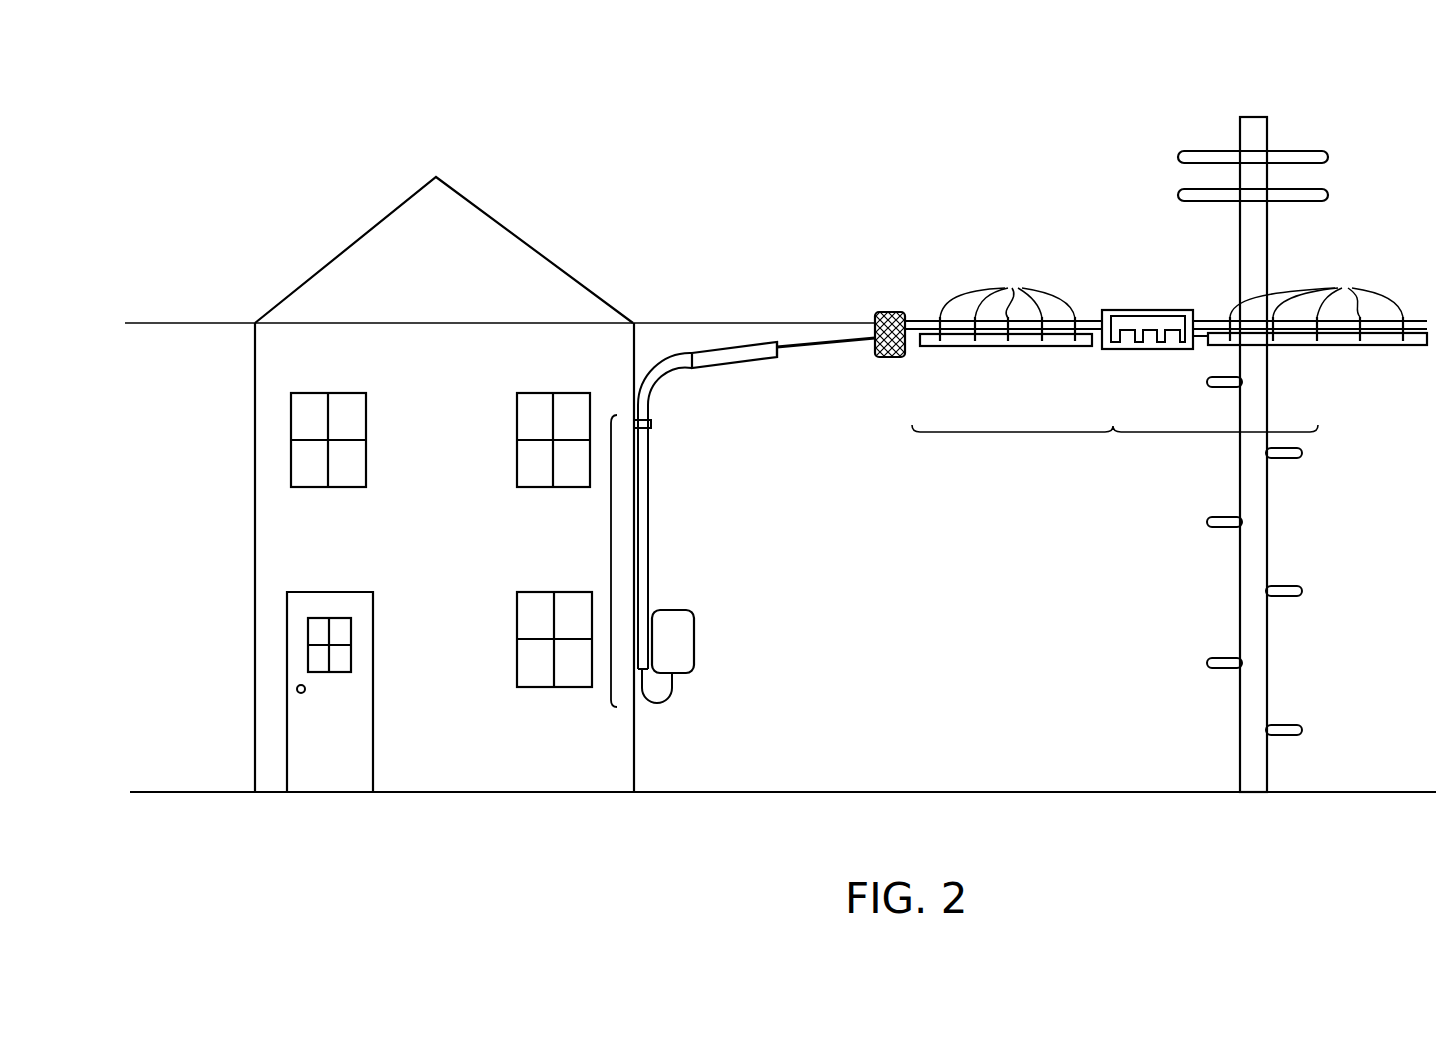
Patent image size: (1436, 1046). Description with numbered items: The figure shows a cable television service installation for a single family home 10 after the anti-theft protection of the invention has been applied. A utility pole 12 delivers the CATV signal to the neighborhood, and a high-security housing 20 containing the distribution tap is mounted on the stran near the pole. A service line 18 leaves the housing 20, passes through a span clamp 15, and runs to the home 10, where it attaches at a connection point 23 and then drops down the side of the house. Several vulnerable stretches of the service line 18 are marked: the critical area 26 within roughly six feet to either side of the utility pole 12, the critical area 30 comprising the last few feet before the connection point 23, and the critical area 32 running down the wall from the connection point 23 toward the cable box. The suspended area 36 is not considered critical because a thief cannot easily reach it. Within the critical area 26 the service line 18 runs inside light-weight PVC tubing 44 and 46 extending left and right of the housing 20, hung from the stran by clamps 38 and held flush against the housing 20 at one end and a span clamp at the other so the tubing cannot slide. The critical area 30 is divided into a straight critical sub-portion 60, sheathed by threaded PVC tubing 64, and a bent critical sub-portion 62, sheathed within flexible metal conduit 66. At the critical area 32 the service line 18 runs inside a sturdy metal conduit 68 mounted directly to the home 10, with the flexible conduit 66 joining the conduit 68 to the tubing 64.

The home 10 is at (363, 203).
The utility pole 12 is at (1204, 122).
The span clamp 15 is at (880, 312).
The service line 18 is at (913, 343).
The high-security housing 20 is at (1121, 310).
The connection point 23 is at (655, 444).
The critical area 26 is at (1115, 448).
The critical area 30 is at (681, 345).
The critical area 32 is at (604, 543).
The area 36 is at (826, 369).
The clamps 38 is at (1171, 299).
The PVC tubing 44 is at (997, 348).
The PVC tubing 46 is at (1338, 347).
The critical sub-portion 60 is at (736, 377).
The critical sub-portion 62 is at (671, 407).
The PVC tubing 64 is at (780, 349).
The flexible metal conduit 66 is at (641, 386).
The metal conduit 68 is at (651, 514).